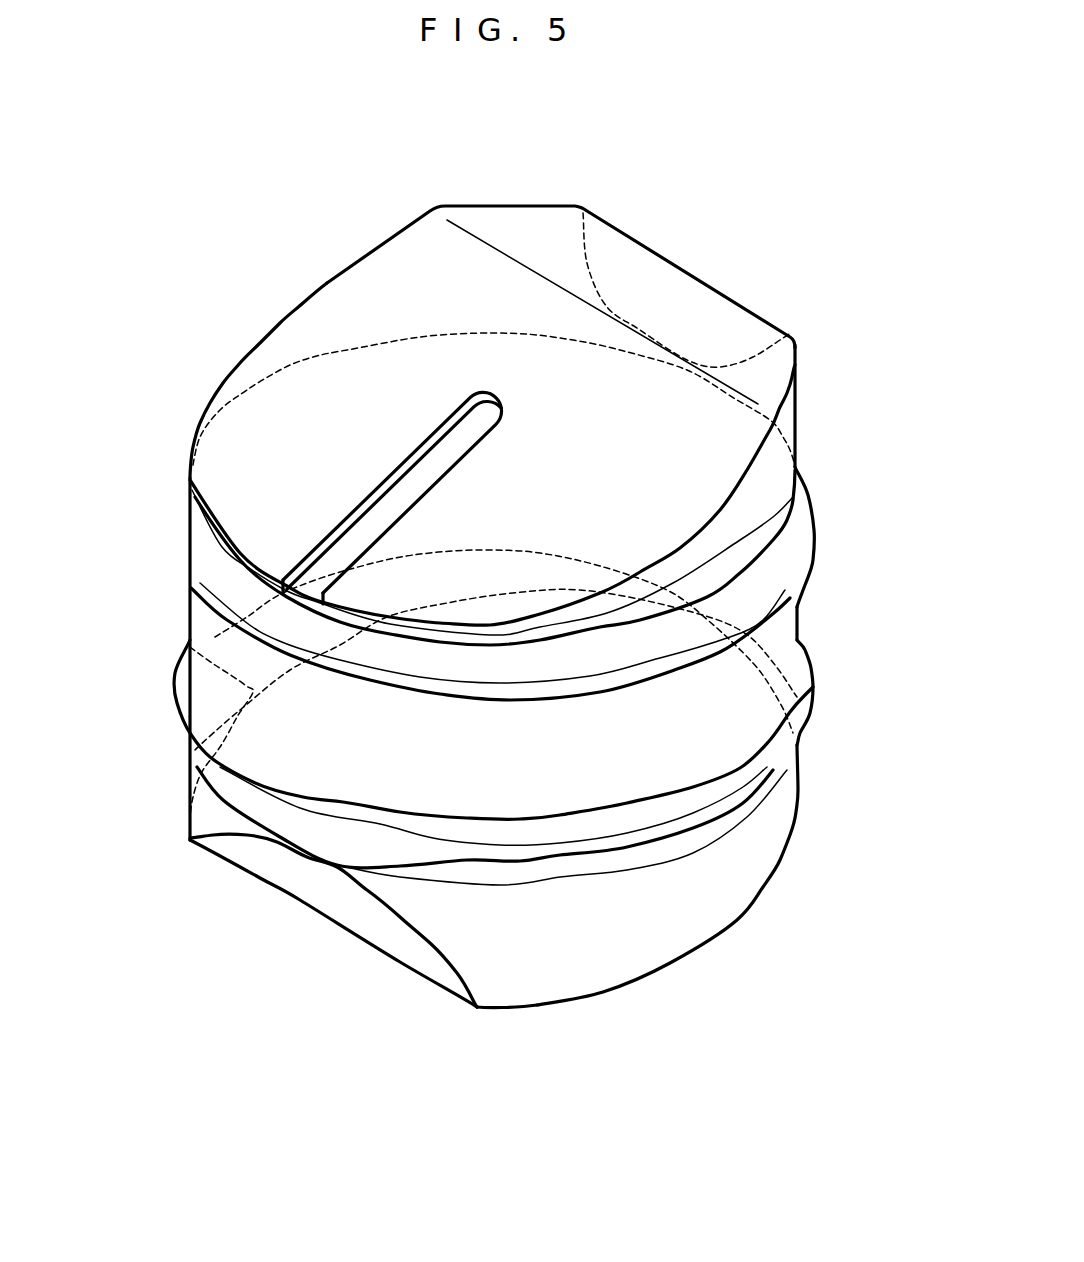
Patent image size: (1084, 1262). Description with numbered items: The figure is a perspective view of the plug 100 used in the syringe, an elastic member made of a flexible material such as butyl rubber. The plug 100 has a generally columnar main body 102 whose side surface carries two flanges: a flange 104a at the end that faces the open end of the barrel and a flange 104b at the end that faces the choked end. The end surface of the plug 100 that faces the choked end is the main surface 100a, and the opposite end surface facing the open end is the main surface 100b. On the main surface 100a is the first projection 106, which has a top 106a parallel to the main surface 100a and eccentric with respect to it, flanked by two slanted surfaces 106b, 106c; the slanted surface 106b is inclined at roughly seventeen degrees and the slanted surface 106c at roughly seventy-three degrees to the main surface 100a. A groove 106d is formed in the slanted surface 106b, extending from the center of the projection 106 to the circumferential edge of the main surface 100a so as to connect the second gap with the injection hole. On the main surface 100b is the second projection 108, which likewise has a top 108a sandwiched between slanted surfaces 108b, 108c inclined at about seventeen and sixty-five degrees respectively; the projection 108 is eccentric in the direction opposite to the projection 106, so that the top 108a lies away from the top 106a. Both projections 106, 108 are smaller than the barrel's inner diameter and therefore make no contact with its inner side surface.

The plug 100 is at (277, 295).
The main surface 100a is at (797, 515).
The main surface 100b is at (215, 637).
The main body 102 is at (580, 787).
The flange 104a is at (712, 787).
The flange 104b is at (790, 565).
The projection 106 is at (763, 466).
The top 106a is at (520, 228).
The slanted surface 106b is at (403, 288).
The slanted surface 106c is at (677, 290).
The groove 106d is at (373, 497).
The projection 108 is at (698, 915).
The top 108a is at (480, 1011).
The slanted surface 108b is at (250, 692).
The slanted surface 108c is at (363, 927).